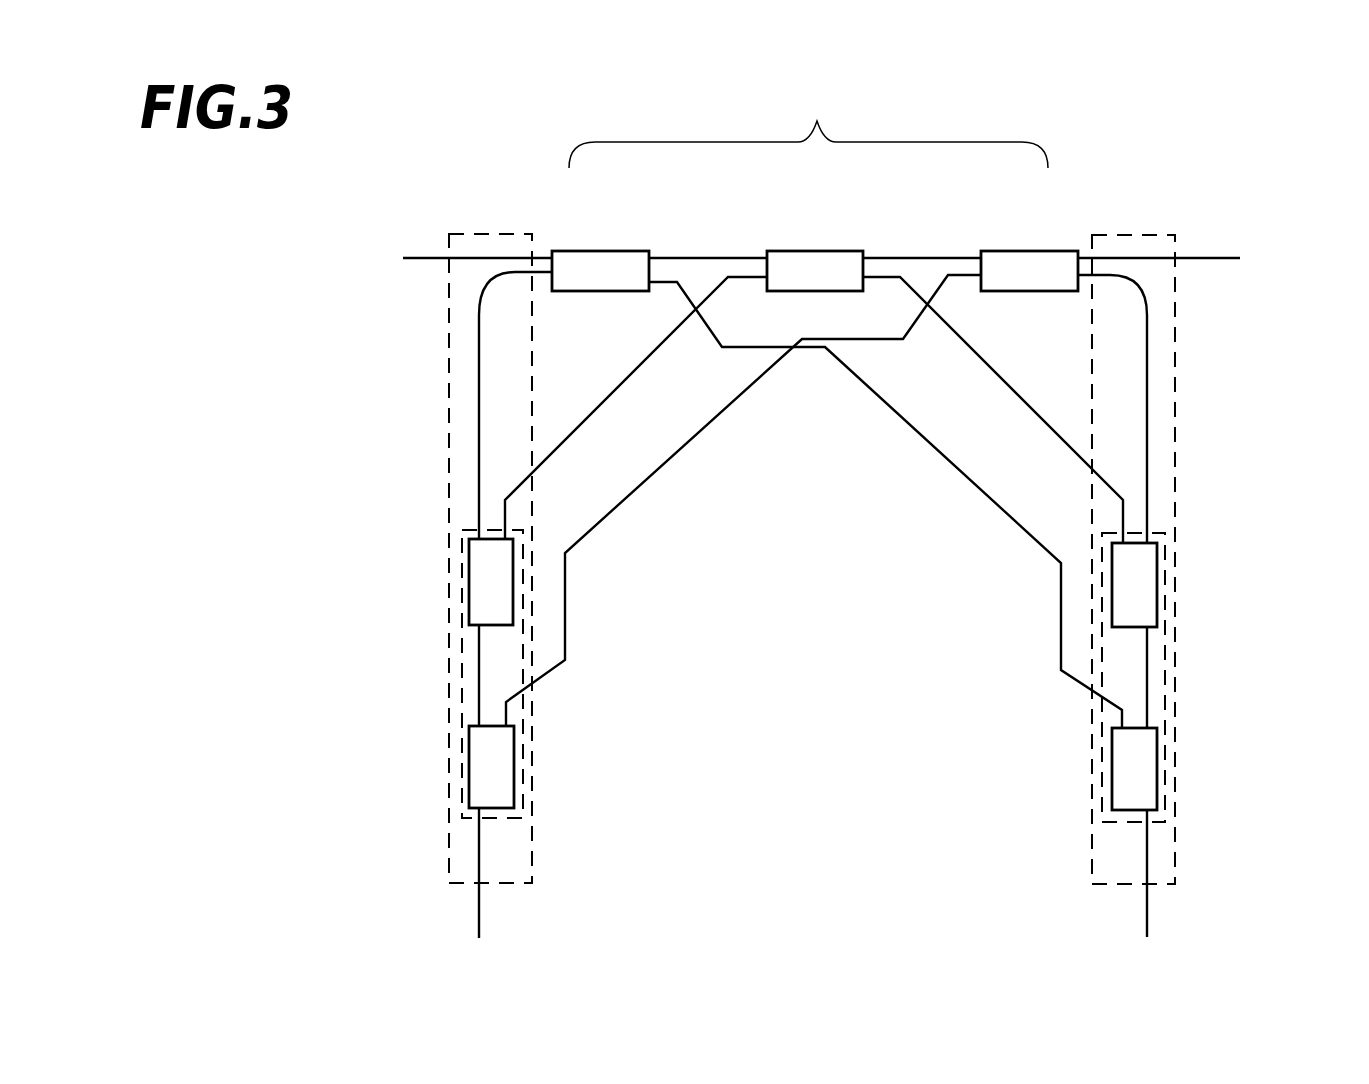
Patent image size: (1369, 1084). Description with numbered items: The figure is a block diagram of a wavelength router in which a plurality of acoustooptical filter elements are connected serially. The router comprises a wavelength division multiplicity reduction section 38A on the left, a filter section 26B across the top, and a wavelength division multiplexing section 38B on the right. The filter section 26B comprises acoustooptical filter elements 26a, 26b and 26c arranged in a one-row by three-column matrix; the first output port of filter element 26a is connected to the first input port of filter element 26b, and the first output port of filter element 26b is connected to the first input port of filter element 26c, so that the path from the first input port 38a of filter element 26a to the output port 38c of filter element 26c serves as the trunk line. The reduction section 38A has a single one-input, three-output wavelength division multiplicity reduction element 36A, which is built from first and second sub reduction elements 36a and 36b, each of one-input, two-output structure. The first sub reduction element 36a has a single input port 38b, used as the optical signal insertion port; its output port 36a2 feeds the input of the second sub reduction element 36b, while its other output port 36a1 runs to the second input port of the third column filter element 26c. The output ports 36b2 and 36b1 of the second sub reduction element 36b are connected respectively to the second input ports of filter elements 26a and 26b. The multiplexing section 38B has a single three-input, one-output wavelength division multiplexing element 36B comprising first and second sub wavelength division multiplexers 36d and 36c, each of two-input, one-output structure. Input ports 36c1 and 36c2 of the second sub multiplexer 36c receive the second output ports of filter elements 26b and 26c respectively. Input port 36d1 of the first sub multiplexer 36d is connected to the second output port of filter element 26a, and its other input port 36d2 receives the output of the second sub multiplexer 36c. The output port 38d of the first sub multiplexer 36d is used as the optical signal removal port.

The filter section 26B is at (845, 115).
The acoustooptical filter element 26a is at (605, 258).
The acoustooptical filter element 26b is at (816, 258).
The acoustooptical filter element 26c is at (1030, 258).
The wavelength division multiplicity reduction section 38A is at (498, 234).
The wavelength division multiplexing section 38B is at (1142, 235).
The first input port 38a is at (430, 262).
The input port 38b is at (479, 850).
The output port 38c is at (1208, 262).
The output port 38d is at (1147, 870).
The wavelength division multiplicity reduction element 36A is at (462, 625).
The wavelength division multiplexing element 36B is at (1167, 622).
The first sub wavelength division multiplicity reduction element 36a is at (469, 765).
The second sub wavelength division multiplicity reduction element 36b is at (469, 580).
The second sub wavelength division multiplexer 36c is at (1157, 584).
The first sub wavelength division multiplexer 36d is at (1157, 773).
The output port 36a1 is at (553, 672).
The output port 36a2 is at (479, 678).
The output port 36b1 is at (598, 406).
The output port 36b2 is at (478, 382).
The input port 36c1 is at (1018, 394).
The input port 36c2 is at (1147, 408).
The input port 36d1 is at (1075, 682).
The input port 36d2 is at (1147, 670).